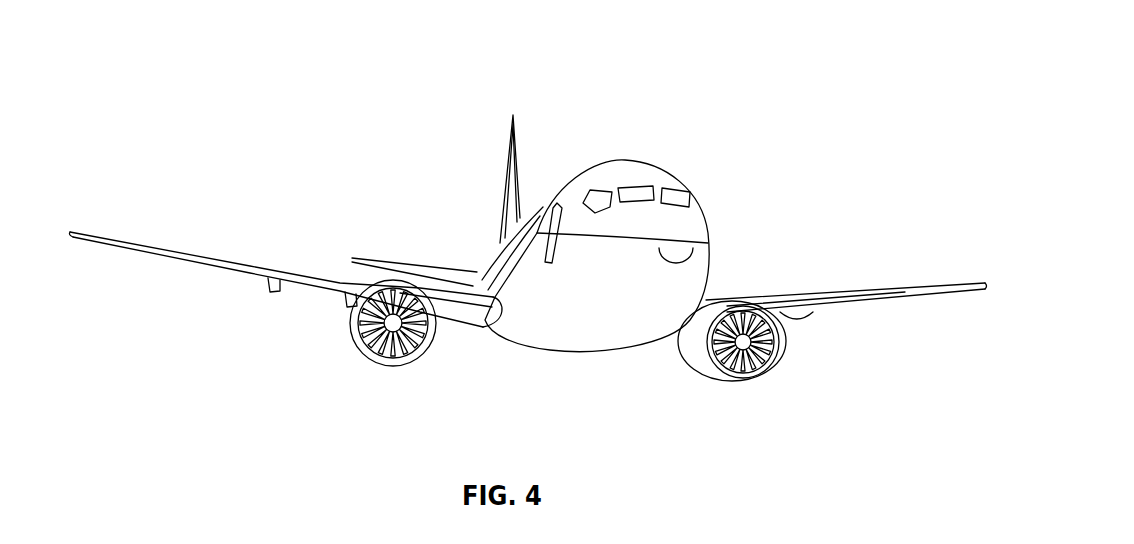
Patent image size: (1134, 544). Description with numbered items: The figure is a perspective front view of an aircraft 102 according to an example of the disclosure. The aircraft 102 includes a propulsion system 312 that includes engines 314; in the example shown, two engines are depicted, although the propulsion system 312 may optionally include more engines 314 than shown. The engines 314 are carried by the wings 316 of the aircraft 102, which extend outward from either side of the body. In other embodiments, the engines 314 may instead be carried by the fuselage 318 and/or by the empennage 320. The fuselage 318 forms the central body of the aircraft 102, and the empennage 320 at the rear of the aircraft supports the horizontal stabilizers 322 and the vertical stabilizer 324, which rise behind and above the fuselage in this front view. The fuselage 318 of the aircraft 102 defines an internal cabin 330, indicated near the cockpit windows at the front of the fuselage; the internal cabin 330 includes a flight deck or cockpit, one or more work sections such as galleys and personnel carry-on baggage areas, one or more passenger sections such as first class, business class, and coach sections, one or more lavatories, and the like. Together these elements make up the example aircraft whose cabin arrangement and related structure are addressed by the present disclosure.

The aircraft 102 is at (300, 71).
The propulsion system 312 is at (299, 375).
The engines 314 is at (387, 366).
The wings 316 is at (194, 252).
The fuselage 318 is at (705, 213).
The empennage 320 is at (500, 243).
The horizontal stabilizers 322 is at (383, 262).
The vertical stabilizer 324 is at (512, 152).
The internal cabin 330 is at (636, 188).